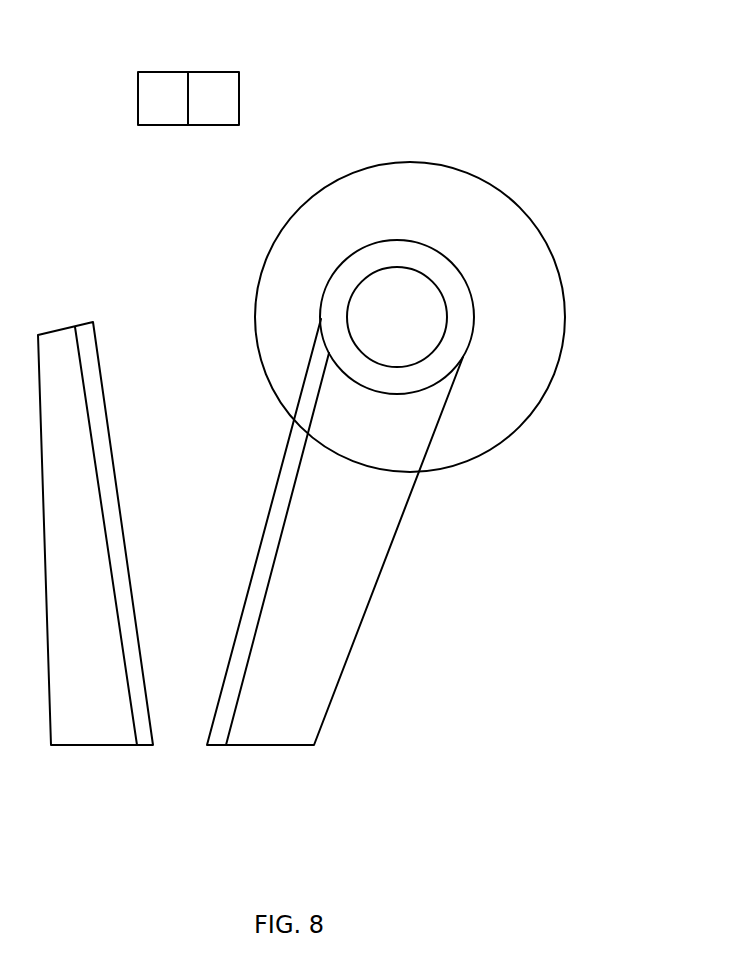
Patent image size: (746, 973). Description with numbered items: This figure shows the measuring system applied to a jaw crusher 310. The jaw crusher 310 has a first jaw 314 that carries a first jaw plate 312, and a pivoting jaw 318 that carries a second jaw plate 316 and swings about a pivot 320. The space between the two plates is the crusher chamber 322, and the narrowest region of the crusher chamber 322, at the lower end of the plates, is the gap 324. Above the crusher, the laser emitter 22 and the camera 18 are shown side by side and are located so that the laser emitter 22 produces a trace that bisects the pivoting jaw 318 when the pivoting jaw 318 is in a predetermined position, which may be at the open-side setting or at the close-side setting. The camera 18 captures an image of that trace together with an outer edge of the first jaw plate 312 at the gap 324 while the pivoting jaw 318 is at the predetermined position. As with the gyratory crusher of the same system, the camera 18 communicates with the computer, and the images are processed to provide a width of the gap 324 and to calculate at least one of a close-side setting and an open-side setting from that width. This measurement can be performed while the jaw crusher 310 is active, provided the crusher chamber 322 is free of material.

The camera 18 is at (220, 96).
The laser emitter 22 is at (160, 92).
The jaw crusher 310 is at (593, 130).
The first jaw plate 312 is at (95, 396).
The first jaw 314 is at (60, 343).
The second jaw plate 316 is at (252, 603).
The pivoting jaw 318 is at (345, 597).
The pivot 320 is at (402, 316).
The crusher chamber 322 is at (192, 365).
The gap 324 is at (179, 740).